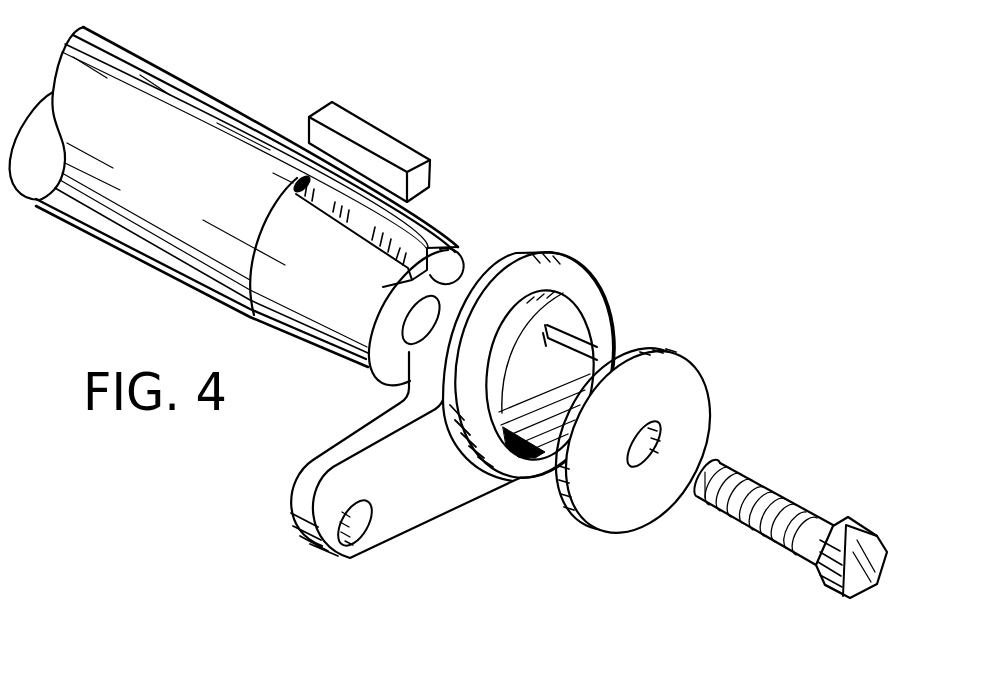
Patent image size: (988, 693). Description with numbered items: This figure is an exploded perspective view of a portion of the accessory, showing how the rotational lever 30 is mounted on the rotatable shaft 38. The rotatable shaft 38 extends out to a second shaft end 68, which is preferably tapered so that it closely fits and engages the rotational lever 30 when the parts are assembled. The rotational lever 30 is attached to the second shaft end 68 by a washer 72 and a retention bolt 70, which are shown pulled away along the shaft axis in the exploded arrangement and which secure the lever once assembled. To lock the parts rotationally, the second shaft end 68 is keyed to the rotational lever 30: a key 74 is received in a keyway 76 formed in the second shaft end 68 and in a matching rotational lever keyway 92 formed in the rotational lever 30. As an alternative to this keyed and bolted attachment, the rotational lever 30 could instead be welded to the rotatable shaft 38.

The rotational lever 30 is at (416, 520).
The rotatable shaft 38 is at (147, 269).
The second shaft end 68 is at (342, 357).
The retention bolt 70 is at (860, 597).
The washer 72 is at (626, 518).
The key 74 is at (377, 142).
The keyway 76 is at (460, 262).
The rotational lever keyway 92 is at (556, 318).